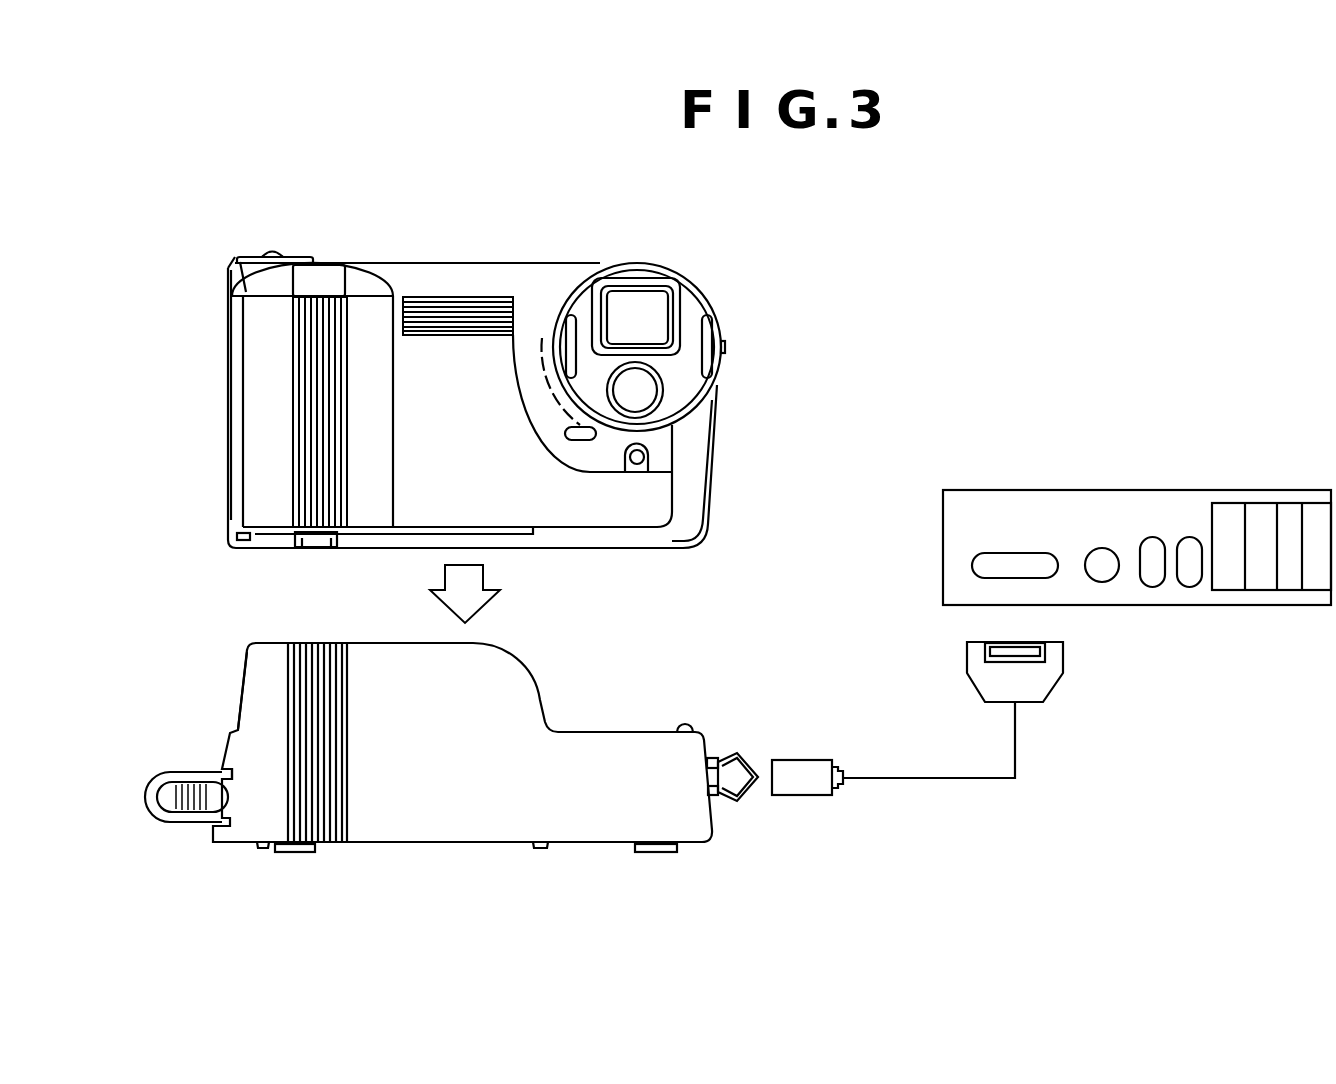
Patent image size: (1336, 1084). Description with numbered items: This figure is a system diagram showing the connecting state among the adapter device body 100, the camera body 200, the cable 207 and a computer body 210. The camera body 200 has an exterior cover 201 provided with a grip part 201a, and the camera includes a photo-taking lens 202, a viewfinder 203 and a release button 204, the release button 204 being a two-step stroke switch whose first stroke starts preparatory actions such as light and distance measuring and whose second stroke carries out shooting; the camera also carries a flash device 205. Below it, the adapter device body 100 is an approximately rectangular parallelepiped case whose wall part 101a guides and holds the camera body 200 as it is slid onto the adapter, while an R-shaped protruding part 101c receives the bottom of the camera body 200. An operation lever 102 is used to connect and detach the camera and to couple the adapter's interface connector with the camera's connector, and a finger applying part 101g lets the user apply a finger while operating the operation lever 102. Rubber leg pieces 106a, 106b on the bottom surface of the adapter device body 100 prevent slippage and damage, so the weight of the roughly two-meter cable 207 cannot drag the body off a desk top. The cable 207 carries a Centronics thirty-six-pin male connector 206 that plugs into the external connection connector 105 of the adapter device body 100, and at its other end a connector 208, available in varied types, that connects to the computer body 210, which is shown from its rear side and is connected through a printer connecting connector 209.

The adapter device body 100 is at (457, 828).
The wall part 101a is at (250, 688).
The R-shaped protruding part 101c is at (685, 726).
The finger applying part 101g is at (224, 790).
The operation lever 102 is at (170, 824).
The external connection connector 105 is at (716, 795).
The rubber leg piece 106a is at (660, 852).
The rubber leg piece 106b is at (295, 852).
The camera body 200 is at (517, 262).
The exterior cover 201 is at (565, 280).
The grip part 201a is at (258, 408).
The photo-taking lens 202 is at (648, 390).
The viewfinder 203 is at (645, 300).
The release button 204 is at (333, 285).
The flash device 205 is at (442, 300).
The Centronics 36-pin male connector 206 is at (815, 797).
The cable 207 is at (930, 780).
The connector 208 is at (1035, 695).
The printer connecting connector 209 is at (1005, 563).
The computer body 210 is at (1112, 515).